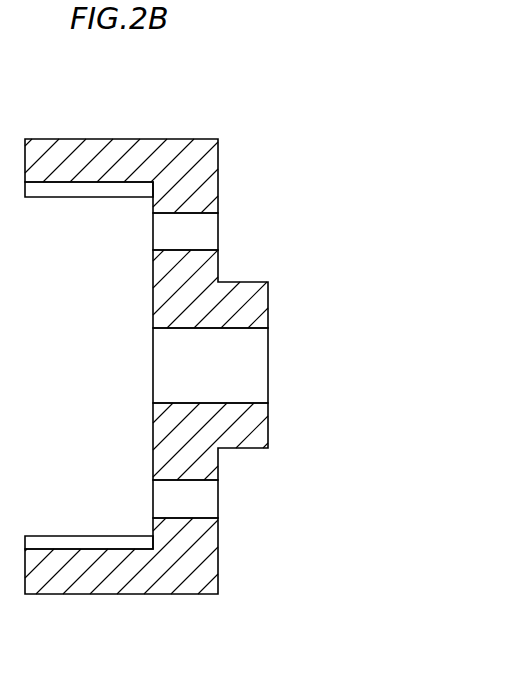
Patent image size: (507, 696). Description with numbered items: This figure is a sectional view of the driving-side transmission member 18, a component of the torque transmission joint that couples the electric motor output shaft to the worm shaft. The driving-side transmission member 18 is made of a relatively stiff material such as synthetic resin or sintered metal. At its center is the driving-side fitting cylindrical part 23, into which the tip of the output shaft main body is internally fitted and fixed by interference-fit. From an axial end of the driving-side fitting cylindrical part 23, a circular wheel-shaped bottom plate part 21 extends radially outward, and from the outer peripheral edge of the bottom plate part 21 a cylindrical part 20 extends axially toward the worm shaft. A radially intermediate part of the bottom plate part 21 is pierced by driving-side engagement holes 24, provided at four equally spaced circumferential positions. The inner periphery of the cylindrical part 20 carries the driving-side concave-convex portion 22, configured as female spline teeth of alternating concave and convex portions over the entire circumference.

The driving-side transmission member 18 is at (173, 155).
The cylindrical part 20 is at (105, 577).
The bottom plate part 21 is at (163, 468).
The driving-side concave-convex portion 22 is at (68, 547).
The driving-side fitting cylindrical part 23 is at (242, 298).
The driving-side engagement hole 24 is at (170, 250).